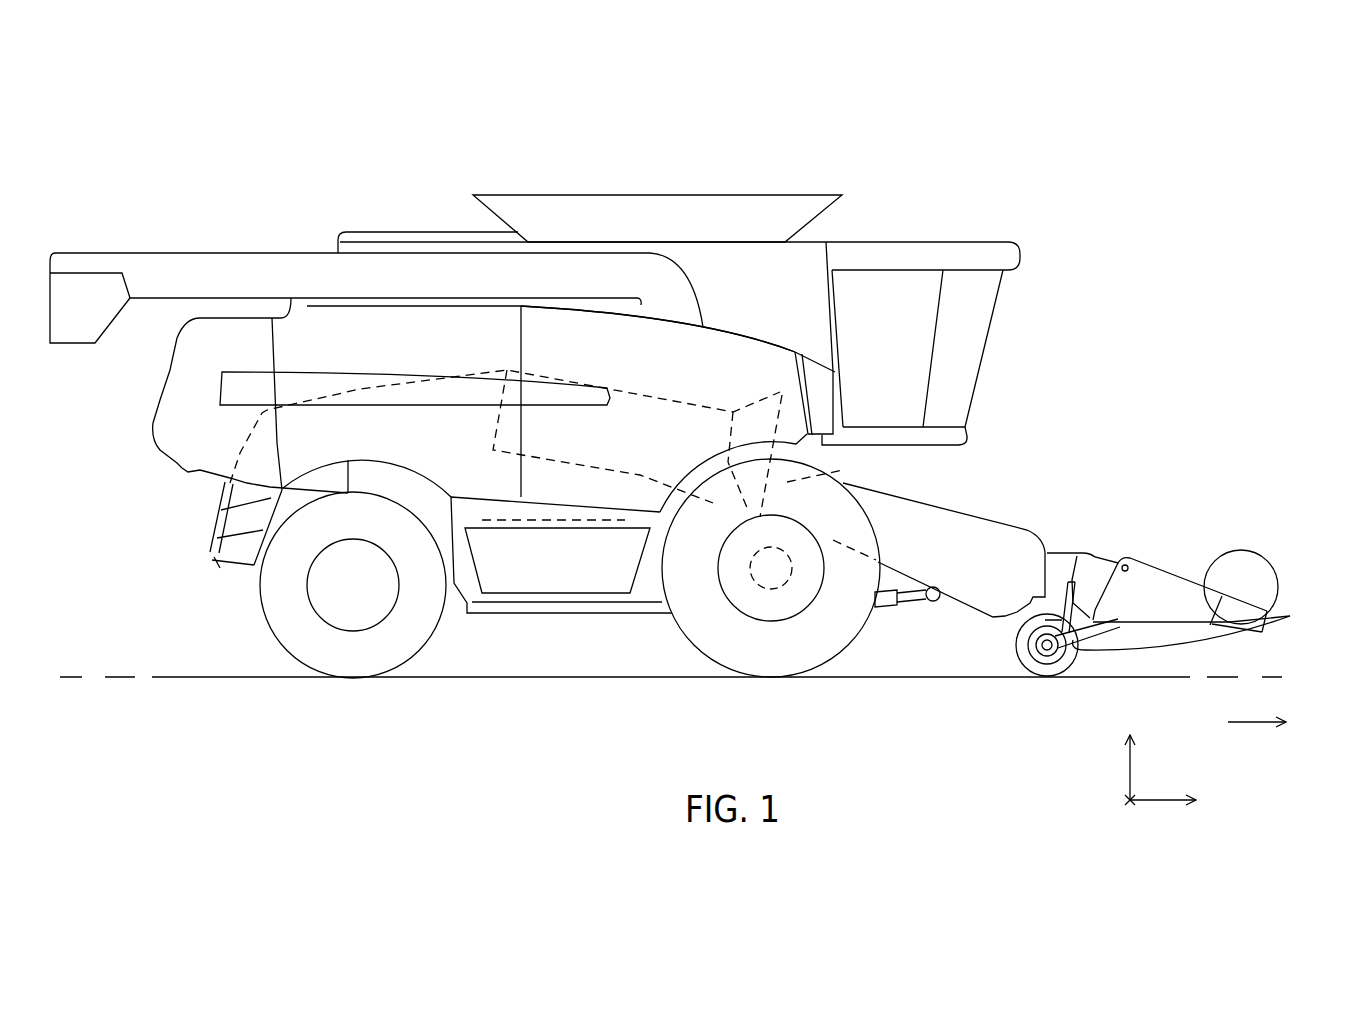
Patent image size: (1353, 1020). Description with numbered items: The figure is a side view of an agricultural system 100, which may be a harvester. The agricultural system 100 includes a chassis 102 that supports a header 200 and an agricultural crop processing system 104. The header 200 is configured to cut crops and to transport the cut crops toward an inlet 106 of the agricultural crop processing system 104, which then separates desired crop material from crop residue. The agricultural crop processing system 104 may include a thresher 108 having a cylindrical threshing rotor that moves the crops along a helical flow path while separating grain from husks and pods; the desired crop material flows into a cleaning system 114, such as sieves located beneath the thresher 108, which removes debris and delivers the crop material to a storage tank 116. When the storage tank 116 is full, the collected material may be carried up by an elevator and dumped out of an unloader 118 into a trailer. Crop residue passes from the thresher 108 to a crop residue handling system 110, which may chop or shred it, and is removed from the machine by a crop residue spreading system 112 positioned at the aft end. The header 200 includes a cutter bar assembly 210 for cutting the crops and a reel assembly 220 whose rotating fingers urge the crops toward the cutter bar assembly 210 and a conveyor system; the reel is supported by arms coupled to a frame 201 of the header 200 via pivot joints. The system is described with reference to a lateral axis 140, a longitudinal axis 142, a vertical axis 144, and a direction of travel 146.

The agricultural system 100 is at (1020, 152).
The chassis 102 is at (503, 620).
The agricultural crop processing system 104 is at (640, 372).
The inlet 106 is at (850, 480).
The thresher 108 is at (655, 393).
The crop residue handling system 110 is at (323, 364).
The crop residue spreading system 112 is at (208, 537).
The cleaning system 114 is at (530, 527).
The storage tank 116 is at (678, 195).
The unloader 118 is at (188, 252).
The lateral axis 140 is at (1127, 803).
The longitudinal axis 142 is at (1157, 802).
The vertical axis 144 is at (1128, 775).
The direction of travel 146 is at (1252, 722).
The header 200 is at (1184, 552).
The frame 201 is at (1083, 565).
The cutter bar assembly 210 is at (1277, 635).
The reel assembly 220 is at (1205, 518).